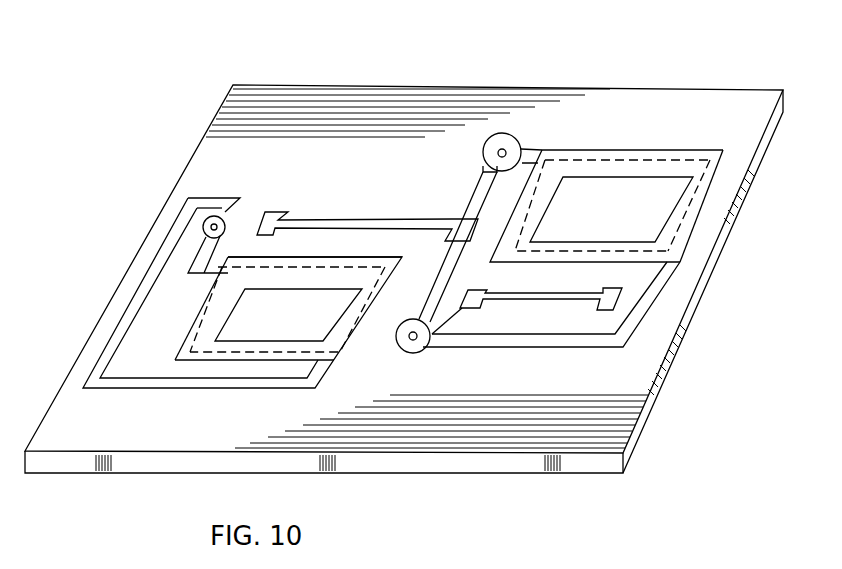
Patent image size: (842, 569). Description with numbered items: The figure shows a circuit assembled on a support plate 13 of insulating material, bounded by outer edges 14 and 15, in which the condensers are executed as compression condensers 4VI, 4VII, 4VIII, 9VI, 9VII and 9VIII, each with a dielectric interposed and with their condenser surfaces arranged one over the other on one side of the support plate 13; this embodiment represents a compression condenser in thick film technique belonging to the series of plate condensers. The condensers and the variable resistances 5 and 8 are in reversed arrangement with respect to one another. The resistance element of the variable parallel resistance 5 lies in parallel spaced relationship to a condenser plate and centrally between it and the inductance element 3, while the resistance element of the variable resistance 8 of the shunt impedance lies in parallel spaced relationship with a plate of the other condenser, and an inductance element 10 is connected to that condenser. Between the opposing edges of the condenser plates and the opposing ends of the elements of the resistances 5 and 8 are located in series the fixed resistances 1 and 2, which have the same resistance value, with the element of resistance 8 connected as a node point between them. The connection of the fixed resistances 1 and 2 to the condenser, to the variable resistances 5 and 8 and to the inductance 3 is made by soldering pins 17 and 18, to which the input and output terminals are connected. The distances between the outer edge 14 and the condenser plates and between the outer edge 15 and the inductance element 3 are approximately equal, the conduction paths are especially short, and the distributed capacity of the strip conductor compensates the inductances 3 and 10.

The fixed resistance 1 is at (430, 287).
The fixed resistance 2 is at (478, 205).
The inductance element 3 is at (488, 346).
The compression condenser 4VI is at (612, 167).
The compression condenser 4VII is at (550, 233).
The compression condenser 4VIII is at (672, 160).
The variable parallel resistance 5 is at (505, 297).
The variable resistance 8 is at (326, 224).
The compression condenser 9VI is at (310, 250).
The compression condenser 9VII is at (323, 328).
The compression condenser 9VIII is at (200, 316).
The inductance element 10 is at (122, 322).
The support plate 13 is at (688, 358).
The outer edge 14 is at (528, 92).
The outer edge 15 is at (428, 473).
The soldering pin 17 is at (415, 352).
The soldering pin 18 is at (226, 225).